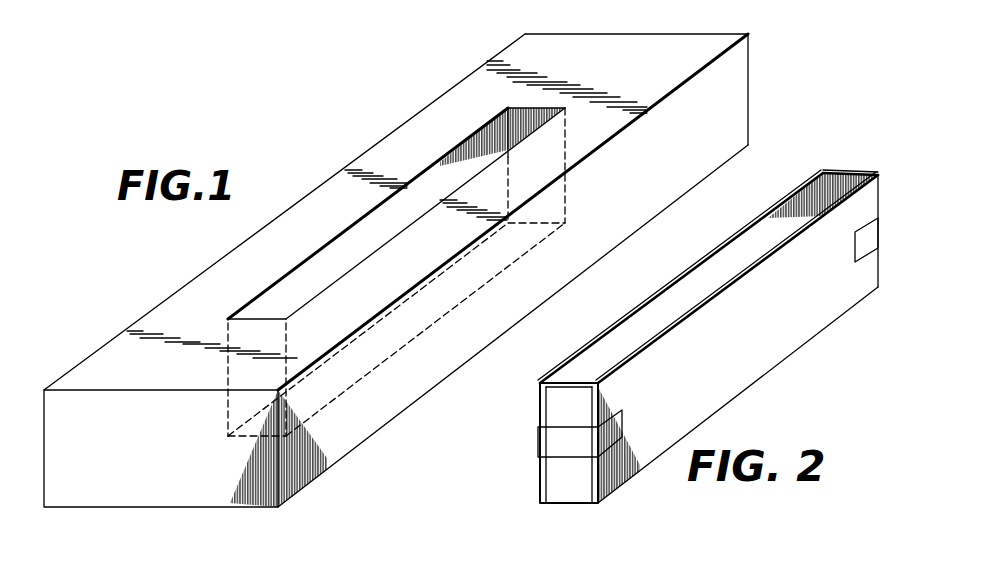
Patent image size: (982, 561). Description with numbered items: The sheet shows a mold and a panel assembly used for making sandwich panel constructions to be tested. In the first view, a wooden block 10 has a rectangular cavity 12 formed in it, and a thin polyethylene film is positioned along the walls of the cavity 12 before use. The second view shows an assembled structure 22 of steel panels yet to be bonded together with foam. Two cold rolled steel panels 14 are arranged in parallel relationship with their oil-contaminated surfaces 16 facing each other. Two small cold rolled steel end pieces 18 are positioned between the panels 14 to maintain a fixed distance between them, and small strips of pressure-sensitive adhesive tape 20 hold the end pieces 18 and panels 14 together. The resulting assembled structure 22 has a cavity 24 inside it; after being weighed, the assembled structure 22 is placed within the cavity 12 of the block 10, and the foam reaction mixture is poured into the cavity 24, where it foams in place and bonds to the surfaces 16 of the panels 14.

In FIG. 1, the wooden block 10 is at (185, 308).
In FIG. 1, the rectangular cavity 12 is at (424, 184).
In FIG. 2, the steel panels 14 is at (704, 263).
In FIG. 2, the oil-contaminated surfaces 16 is at (673, 324).
In FIG. 2, the end pieces 18 is at (847, 172).
In FIG. 2, the pressure-sensitive adhesive tape 20 is at (876, 231).
In FIG. 2, the assembled structure 22 is at (763, 381).
In FIG. 2, the cavity 24 is at (752, 242).